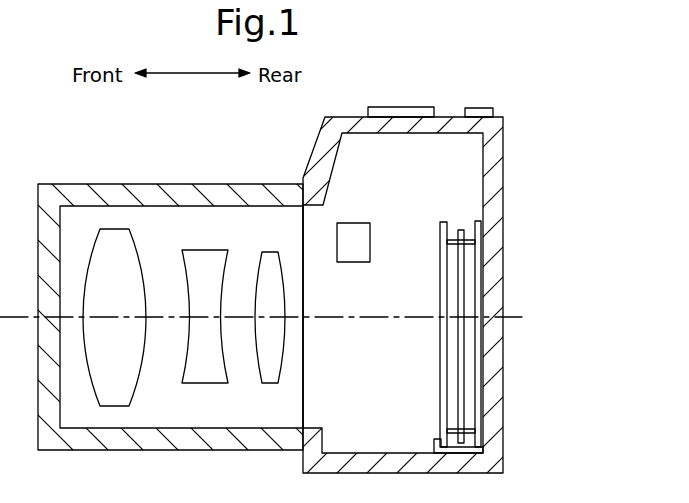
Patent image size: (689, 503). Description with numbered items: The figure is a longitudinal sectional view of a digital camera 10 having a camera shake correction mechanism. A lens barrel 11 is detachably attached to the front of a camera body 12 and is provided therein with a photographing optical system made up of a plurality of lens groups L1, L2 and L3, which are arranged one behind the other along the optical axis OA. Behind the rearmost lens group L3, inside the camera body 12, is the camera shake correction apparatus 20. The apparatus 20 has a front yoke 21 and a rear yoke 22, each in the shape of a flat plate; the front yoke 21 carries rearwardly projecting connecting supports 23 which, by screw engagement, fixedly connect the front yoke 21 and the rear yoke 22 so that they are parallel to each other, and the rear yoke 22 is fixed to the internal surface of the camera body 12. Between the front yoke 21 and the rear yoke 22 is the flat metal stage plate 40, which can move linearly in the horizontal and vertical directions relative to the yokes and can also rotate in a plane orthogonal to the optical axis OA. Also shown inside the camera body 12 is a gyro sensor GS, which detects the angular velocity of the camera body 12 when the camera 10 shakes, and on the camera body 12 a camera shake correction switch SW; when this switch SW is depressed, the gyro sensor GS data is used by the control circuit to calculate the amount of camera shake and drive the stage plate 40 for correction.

The digital camera 10 is at (532, 110).
The lens barrel 11 is at (78, 192).
The camera body 12 is at (318, 182).
The camera shake correction apparatus 20 is at (435, 262).
The front yoke 21 is at (444, 375).
The rear yoke 22 is at (479, 338).
The connecting supports 23 is at (431, 336).
The stage plate 40 is at (461, 290).
The lens group L1 is at (116, 262).
The lens group L2 is at (198, 255).
The rearmost lens group L3 is at (273, 267).
The gyro sensor GS is at (353, 223).
The camera shake correction switch SW is at (482, 108).
The optical axis OA is at (522, 320).